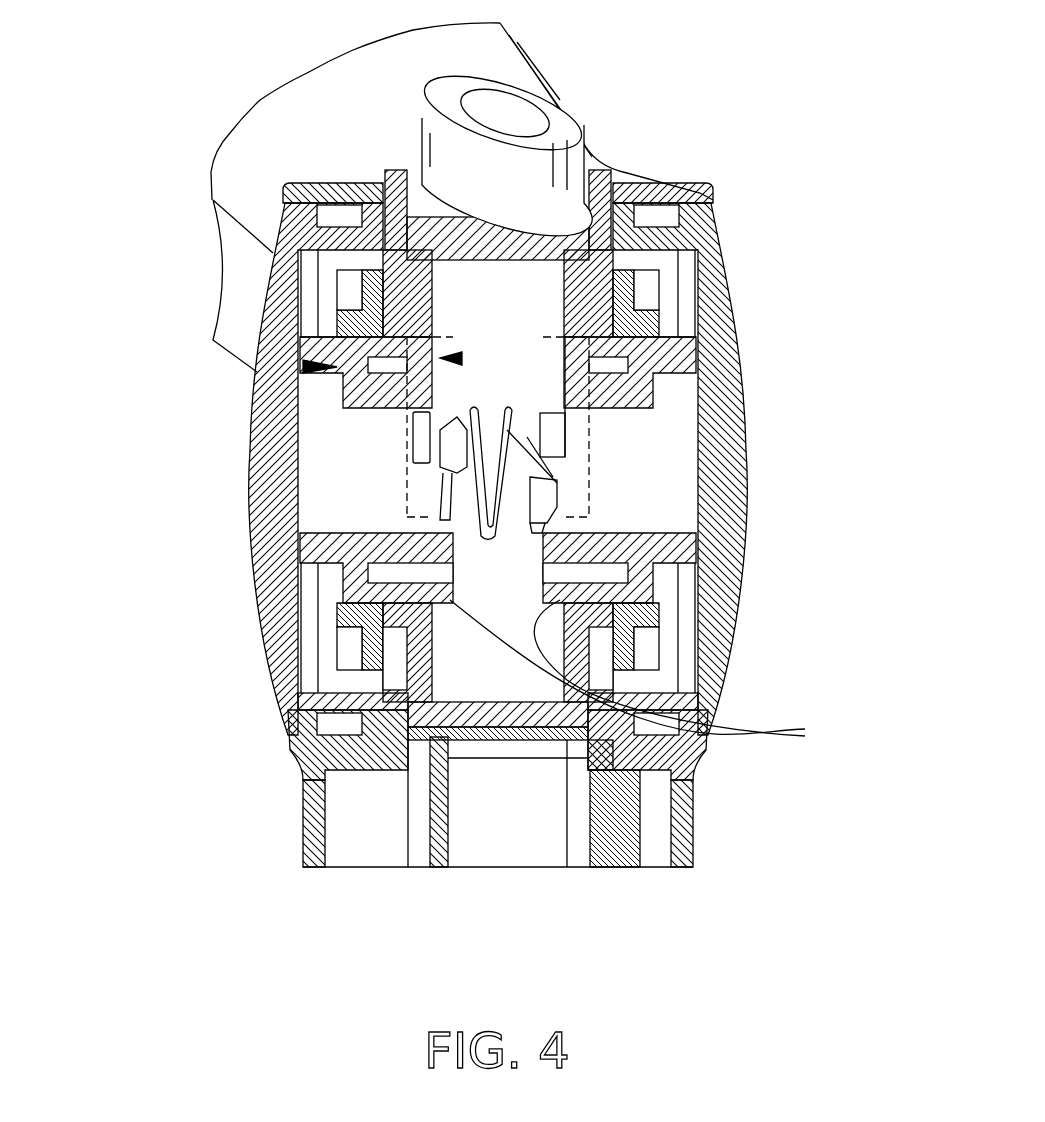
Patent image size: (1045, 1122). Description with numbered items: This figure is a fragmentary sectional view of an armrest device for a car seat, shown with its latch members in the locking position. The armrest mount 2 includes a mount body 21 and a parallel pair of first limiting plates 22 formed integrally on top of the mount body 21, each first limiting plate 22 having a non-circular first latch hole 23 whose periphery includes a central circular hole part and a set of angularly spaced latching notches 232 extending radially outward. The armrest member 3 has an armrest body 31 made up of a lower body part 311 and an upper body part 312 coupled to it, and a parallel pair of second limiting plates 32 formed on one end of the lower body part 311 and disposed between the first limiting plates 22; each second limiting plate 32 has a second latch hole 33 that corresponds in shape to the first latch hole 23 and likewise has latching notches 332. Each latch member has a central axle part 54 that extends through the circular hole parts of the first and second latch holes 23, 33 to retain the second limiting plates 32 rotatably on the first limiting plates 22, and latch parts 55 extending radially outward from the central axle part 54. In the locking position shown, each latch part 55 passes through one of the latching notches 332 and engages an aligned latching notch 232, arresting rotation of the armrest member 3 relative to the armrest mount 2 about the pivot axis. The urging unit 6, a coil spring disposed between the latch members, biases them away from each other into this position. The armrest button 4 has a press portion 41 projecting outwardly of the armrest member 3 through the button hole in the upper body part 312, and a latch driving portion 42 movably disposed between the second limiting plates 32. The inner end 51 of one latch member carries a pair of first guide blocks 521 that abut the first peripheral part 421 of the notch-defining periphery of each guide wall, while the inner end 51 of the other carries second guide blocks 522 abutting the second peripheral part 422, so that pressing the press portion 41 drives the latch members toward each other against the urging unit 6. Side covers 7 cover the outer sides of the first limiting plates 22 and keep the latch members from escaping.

The armrest mount 2 is at (245, 797).
The armrest member 3 is at (388, 195).
The armrest button 4 is at (585, 98).
The urging unit 6 is at (503, 463).
The side covers 7 is at (280, 310).
The mount body 21 is at (617, 797).
The first limiting plates 22 is at (340, 277).
The first latch holes 23 is at (303, 367).
The armrest body 31 is at (300, 72).
The second limiting plates 32 is at (395, 678).
The second latch holes 33 is at (462, 357).
The press portion 41 is at (557, 155).
The latch driving portion 42 is at (580, 250).
The inner end 51 is at (650, 678).
The central axle part 54 is at (330, 548).
The latch part 55 is at (370, 365).
The latching notches 232 is at (313, 342).
The lower body part 311 is at (235, 232).
The upper body part 312 is at (518, 63).
The latching notches 332 is at (600, 325).
The first peripheral part 421 is at (495, 396).
The second peripheral part 422 is at (445, 412).
The first guide blocks 521 is at (450, 450).
The second guide blocks 522 is at (547, 503).